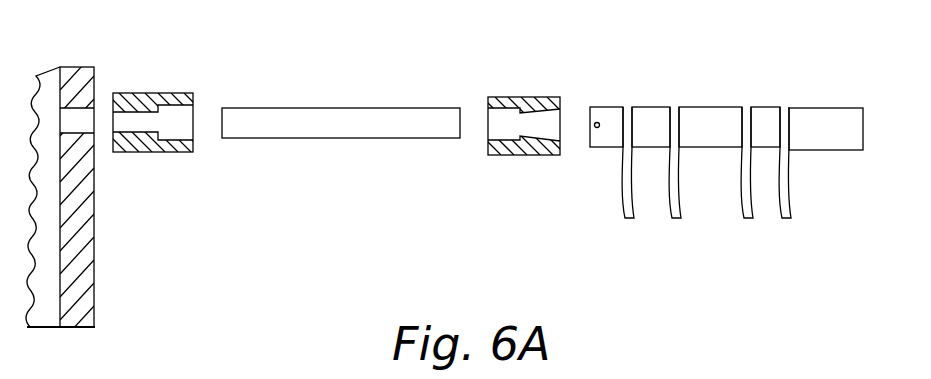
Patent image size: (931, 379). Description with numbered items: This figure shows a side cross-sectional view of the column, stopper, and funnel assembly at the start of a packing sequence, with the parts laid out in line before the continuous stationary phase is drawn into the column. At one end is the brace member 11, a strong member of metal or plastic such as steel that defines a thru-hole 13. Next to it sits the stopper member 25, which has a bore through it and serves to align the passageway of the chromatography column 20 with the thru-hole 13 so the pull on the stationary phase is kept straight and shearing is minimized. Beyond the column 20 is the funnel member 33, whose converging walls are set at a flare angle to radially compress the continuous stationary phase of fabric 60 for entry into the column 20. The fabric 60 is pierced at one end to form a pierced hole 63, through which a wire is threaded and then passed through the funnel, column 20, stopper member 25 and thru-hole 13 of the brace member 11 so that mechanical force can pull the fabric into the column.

The brace member 11 is at (94, 72).
The thru-hole 13 is at (83, 125).
The stopper member 25 is at (167, 93).
The chromatography column 20 is at (310, 108).
The funnel member 33 is at (528, 97).
The continuous stationary phase of fabric 60 is at (705, 107).
The pierced hole 63 is at (597, 128).